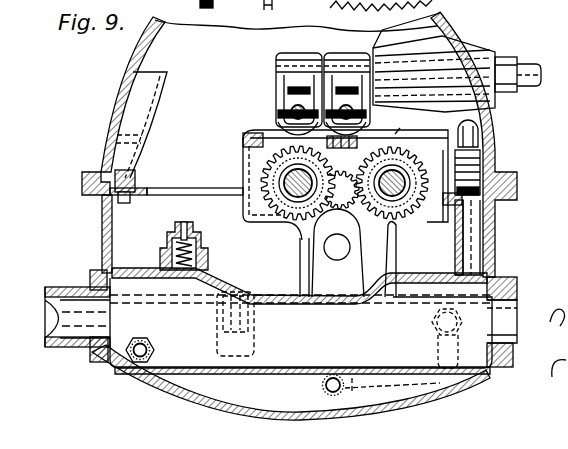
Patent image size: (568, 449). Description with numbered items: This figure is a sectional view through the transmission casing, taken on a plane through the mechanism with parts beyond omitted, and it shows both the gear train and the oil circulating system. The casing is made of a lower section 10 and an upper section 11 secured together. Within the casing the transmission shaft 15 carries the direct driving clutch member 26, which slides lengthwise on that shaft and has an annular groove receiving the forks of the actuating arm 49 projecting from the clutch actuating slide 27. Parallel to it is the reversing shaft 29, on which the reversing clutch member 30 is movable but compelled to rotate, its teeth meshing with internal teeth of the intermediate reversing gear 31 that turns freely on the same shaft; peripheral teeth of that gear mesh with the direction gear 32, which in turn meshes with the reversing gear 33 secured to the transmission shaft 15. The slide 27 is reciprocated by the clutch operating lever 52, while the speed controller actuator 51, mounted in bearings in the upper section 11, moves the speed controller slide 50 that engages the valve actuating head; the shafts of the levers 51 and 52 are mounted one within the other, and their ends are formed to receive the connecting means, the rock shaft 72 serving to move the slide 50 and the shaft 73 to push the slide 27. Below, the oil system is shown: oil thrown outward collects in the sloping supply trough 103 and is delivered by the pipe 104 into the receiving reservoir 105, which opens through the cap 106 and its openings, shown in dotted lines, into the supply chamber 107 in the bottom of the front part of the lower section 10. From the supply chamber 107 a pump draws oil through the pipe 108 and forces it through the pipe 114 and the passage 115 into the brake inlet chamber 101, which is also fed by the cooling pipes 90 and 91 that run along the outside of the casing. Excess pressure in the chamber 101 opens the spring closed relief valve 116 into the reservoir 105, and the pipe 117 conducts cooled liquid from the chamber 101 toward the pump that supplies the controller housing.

The lower section of transmission casing 10 is at (104, 266).
The upper section of transmission casing 11 is at (125, 67).
The transmission shaft 15 is at (298, 198).
The direct driving clutch member 26 is at (285, 203).
The clutch actuating slide 27 is at (352, 133).
The reversing shaft 29 is at (385, 176).
The reversing clutch member 30 is at (413, 220).
The intermediate reversing gear 31 is at (417, 212).
The direction gear 32 is at (368, 245).
The reversing gear 33 is at (248, 210).
The actuating arm 49 is at (406, 124).
The speed controller slide 50 is at (281, 102).
The speed controller actuator 51 is at (283, 78).
The clutch operating lever 52 is at (345, 70).
The rock shaft 72 is at (538, 66).
The shaft 73 is at (505, 60).
The pipe 90 is at (518, 296).
The pipe 91 is at (58, 296).
The brake inlet chamber 101 is at (210, 367).
The supply trough 103 is at (125, 103).
The pipe 104 is at (134, 192).
The receiving reservoir 105 is at (112, 224).
The cap 106 is at (217, 322).
The supply chamber 107 is at (166, 398).
The pipe 108 is at (434, 330).
The pipe 114 is at (480, 134).
The passage 115 is at (470, 224).
The spring closed relief valve 116 is at (205, 270).
The pipe 117 is at (141, 342).